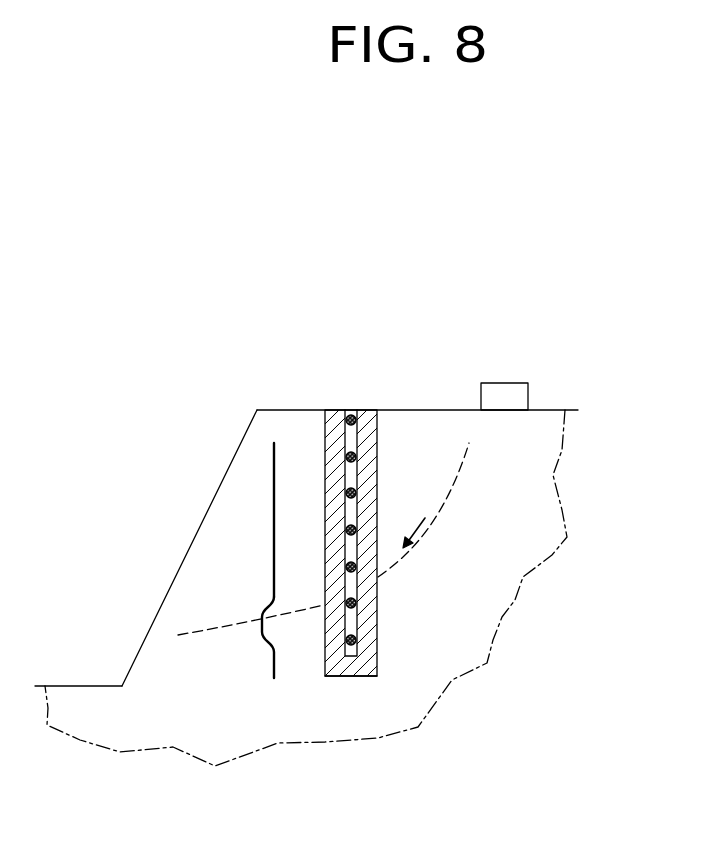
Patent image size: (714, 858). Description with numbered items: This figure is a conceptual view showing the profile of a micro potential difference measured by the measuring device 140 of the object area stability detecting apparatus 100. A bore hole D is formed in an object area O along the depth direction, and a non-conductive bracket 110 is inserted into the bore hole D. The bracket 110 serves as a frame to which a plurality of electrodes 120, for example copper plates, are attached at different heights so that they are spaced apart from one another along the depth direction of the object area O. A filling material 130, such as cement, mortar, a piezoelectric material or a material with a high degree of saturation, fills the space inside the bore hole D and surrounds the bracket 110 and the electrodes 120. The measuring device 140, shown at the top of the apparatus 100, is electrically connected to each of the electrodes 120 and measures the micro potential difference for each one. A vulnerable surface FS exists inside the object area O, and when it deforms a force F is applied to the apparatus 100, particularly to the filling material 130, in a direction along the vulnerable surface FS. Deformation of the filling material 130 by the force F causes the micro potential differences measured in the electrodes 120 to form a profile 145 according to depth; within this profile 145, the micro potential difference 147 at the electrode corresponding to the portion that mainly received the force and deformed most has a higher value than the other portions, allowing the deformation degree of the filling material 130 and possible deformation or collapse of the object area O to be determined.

The object area stability detecting apparatus 100 is at (325, 394).
The non-conductive bracket 110 is at (352, 433).
The electrodes 120 is at (352, 603).
The filling material 130 is at (374, 470).
The measuring device 140 is at (500, 388).
The profile 145 is at (274, 567).
The micro potential difference 147 is at (262, 620).
The object area O is at (230, 502).
The force F is at (420, 532).
The vulnerable surface FS is at (455, 488).
The bore hole D is at (355, 676).